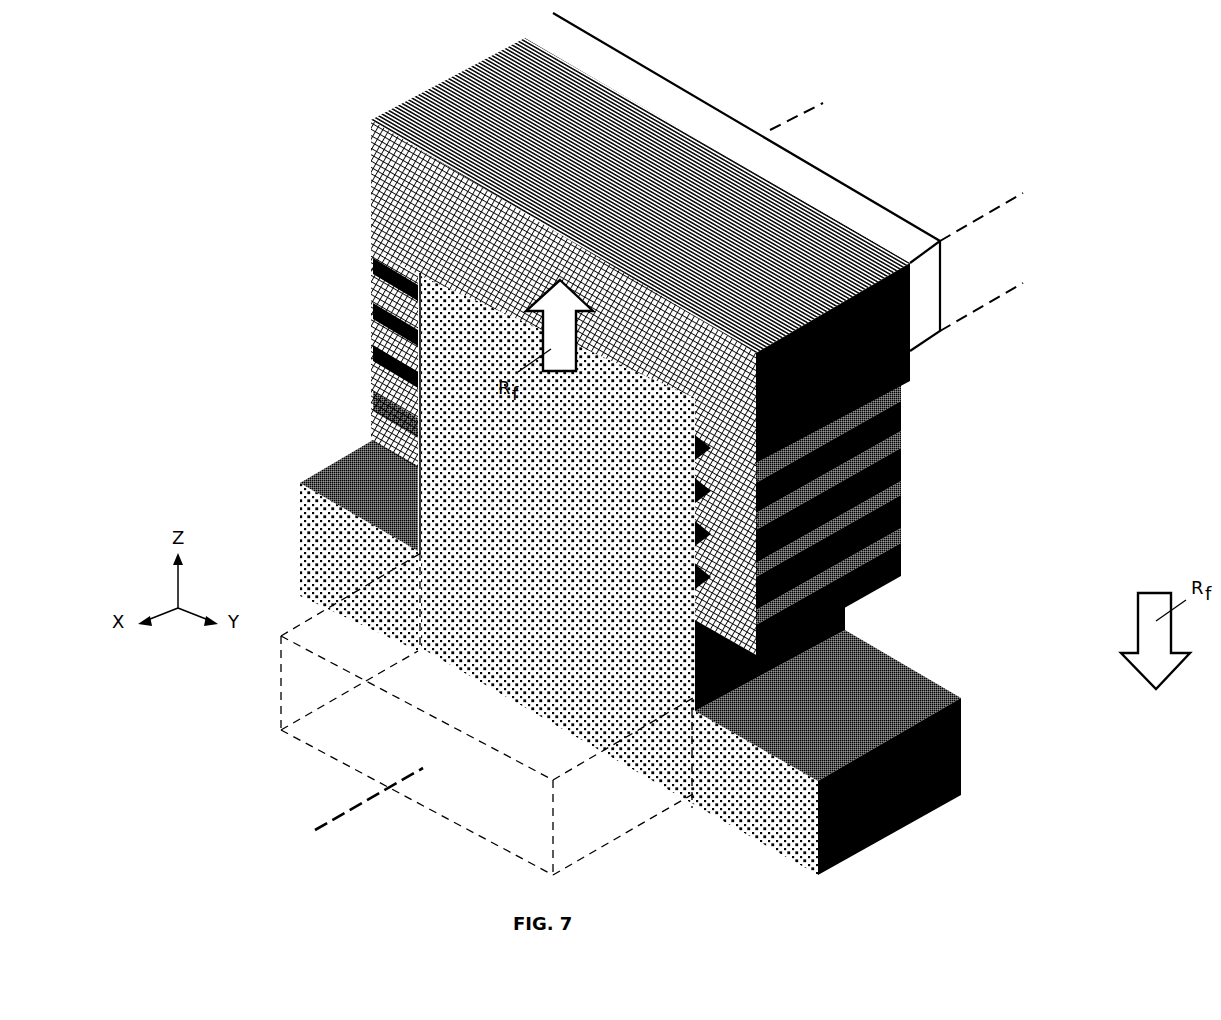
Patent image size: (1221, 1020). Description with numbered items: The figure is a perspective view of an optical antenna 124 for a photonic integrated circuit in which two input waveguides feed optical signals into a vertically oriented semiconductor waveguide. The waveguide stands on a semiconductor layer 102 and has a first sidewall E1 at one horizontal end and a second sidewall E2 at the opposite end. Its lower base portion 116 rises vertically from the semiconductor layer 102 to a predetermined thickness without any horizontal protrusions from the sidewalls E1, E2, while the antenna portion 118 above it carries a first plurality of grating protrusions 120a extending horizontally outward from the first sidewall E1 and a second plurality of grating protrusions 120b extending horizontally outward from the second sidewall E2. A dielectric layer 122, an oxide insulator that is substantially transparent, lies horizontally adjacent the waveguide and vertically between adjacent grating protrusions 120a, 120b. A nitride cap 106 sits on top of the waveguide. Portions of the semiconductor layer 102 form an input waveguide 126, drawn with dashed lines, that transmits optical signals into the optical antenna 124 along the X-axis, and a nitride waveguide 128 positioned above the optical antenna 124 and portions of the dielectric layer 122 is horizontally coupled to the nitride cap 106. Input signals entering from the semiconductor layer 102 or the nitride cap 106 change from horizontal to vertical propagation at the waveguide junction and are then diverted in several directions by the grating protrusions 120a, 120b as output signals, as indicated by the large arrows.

The semiconductor layer 102 is at (749, 794).
The nitride cap 106 is at (360, 158).
The base portion 116 is at (553, 598).
The antenna portion 118 is at (553, 455).
The first plurality of grating protrusions 120a is at (372, 230).
The second plurality of grating protrusions 120b is at (893, 408).
The dielectric layer 122 is at (1148, 480).
The optical antenna 124 is at (236, 245).
The input waveguide 126 is at (268, 700).
The nitride waveguide 128 is at (922, 290).
The first sidewall E1 is at (394, 477).
The second sidewall E2 is at (781, 670).